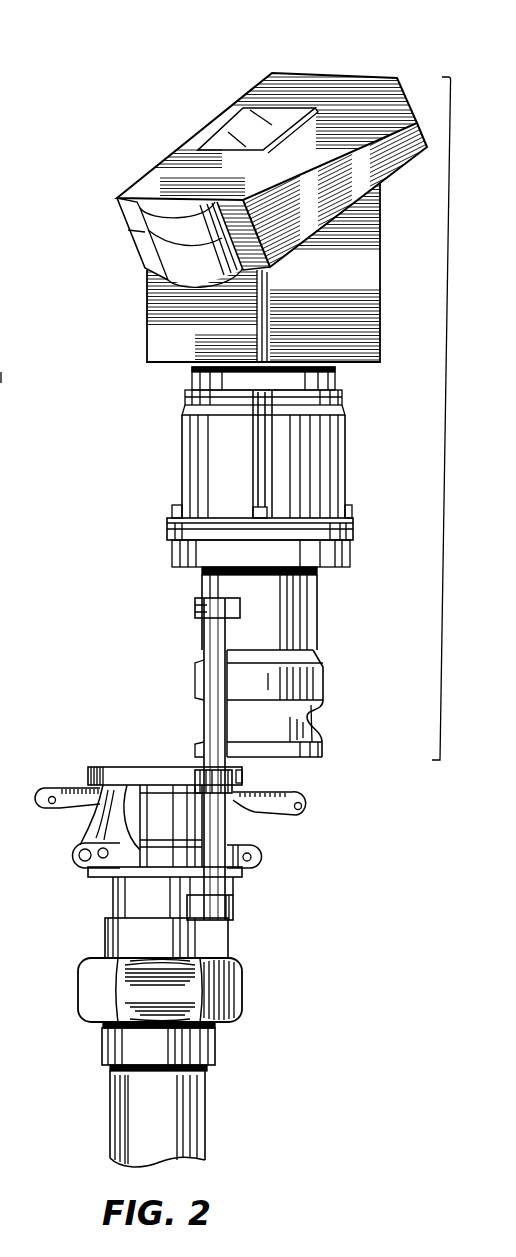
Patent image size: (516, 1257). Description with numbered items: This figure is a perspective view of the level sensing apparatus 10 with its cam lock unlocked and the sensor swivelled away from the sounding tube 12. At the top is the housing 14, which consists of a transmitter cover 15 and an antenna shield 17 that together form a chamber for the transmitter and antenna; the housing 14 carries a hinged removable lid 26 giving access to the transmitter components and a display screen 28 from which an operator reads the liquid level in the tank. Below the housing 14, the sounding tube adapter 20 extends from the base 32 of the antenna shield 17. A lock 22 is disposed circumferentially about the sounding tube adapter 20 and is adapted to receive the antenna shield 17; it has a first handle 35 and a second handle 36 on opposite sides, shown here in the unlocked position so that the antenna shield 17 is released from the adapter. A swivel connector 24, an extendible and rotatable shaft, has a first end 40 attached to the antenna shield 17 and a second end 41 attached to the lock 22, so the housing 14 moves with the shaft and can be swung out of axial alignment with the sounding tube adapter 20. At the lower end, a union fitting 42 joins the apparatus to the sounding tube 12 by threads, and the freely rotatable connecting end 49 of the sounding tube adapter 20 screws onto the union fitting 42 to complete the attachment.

The level sensing apparatus 10 is at (177, 36).
The sounding tube 12 is at (125, 1122).
The housing 14 is at (448, 361).
The transmitter cover 15 is at (192, 458).
The antenna shield 17 is at (312, 686).
The sounding tube adapter 20 is at (142, 940).
The lock 22 is at (148, 805).
The swivel connector 24 is at (212, 656).
The hinged removable lid 26 is at (348, 82).
The display screen 28 is at (247, 132).
The base 32 is at (320, 753).
The first handle 35 is at (52, 812).
The second handle 36 is at (300, 818).
The first end 40 is at (200, 609).
The second end 41 is at (208, 908).
The union fitting 42 is at (205, 1046).
The connecting end 49 is at (105, 1000).